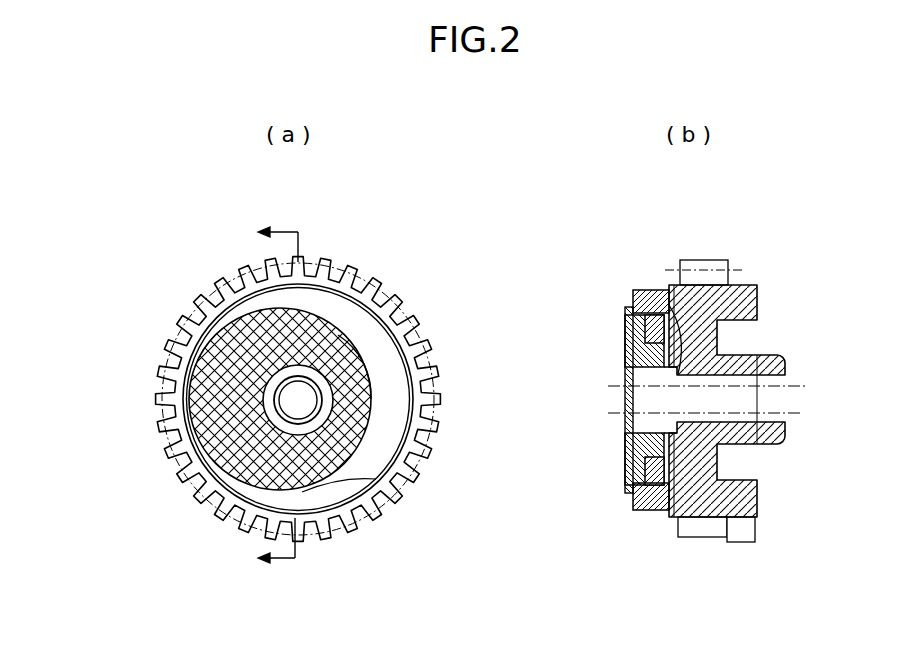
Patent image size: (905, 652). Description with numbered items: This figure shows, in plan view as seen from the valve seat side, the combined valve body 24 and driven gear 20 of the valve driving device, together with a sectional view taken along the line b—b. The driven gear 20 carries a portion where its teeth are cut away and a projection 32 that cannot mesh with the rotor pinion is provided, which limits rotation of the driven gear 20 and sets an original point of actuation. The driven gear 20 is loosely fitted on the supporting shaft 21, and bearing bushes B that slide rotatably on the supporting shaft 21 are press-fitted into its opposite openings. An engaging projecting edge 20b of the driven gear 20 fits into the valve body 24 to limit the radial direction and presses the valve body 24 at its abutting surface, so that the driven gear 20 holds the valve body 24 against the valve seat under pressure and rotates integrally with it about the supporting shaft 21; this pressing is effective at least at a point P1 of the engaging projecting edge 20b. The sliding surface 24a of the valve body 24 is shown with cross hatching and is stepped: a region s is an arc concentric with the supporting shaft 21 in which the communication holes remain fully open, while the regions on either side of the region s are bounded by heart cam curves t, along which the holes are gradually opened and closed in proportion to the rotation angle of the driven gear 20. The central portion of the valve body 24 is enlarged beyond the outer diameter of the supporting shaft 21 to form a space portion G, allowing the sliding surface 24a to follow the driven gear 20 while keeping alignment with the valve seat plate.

The driven gear 20 is at (192, 318).
The engaging projecting edge 20b is at (628, 440).
The supporting shaft 21 is at (806, 375).
The valve body 24 is at (650, 511).
The sliding surface 24a is at (211, 389).
The projection 32 is at (243, 522).
The bearing bush B is at (626, 318).
The point P1 is at (626, 469).
The space portion G is at (270, 427).
The region s is at (356, 390).
The heart cam curve t is at (243, 283).
The line b— b is at (280, 395).